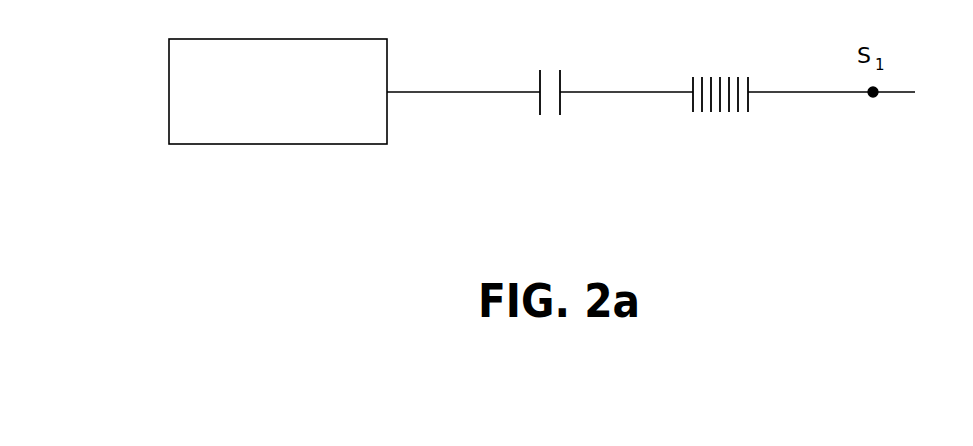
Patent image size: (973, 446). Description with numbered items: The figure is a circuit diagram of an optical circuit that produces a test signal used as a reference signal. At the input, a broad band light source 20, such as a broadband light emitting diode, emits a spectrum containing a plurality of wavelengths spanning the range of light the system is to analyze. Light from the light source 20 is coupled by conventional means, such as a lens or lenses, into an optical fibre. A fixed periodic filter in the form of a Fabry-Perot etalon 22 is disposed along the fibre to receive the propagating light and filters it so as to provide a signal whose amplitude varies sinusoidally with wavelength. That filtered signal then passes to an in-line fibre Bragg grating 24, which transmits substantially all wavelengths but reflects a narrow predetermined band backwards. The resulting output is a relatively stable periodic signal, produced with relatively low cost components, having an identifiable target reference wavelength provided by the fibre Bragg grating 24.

The broad band light source 20 is at (277, 144).
The Fabry-Perot etalon 22 is at (550, 113).
The in-line fibre Bragg grating 24 is at (718, 114).